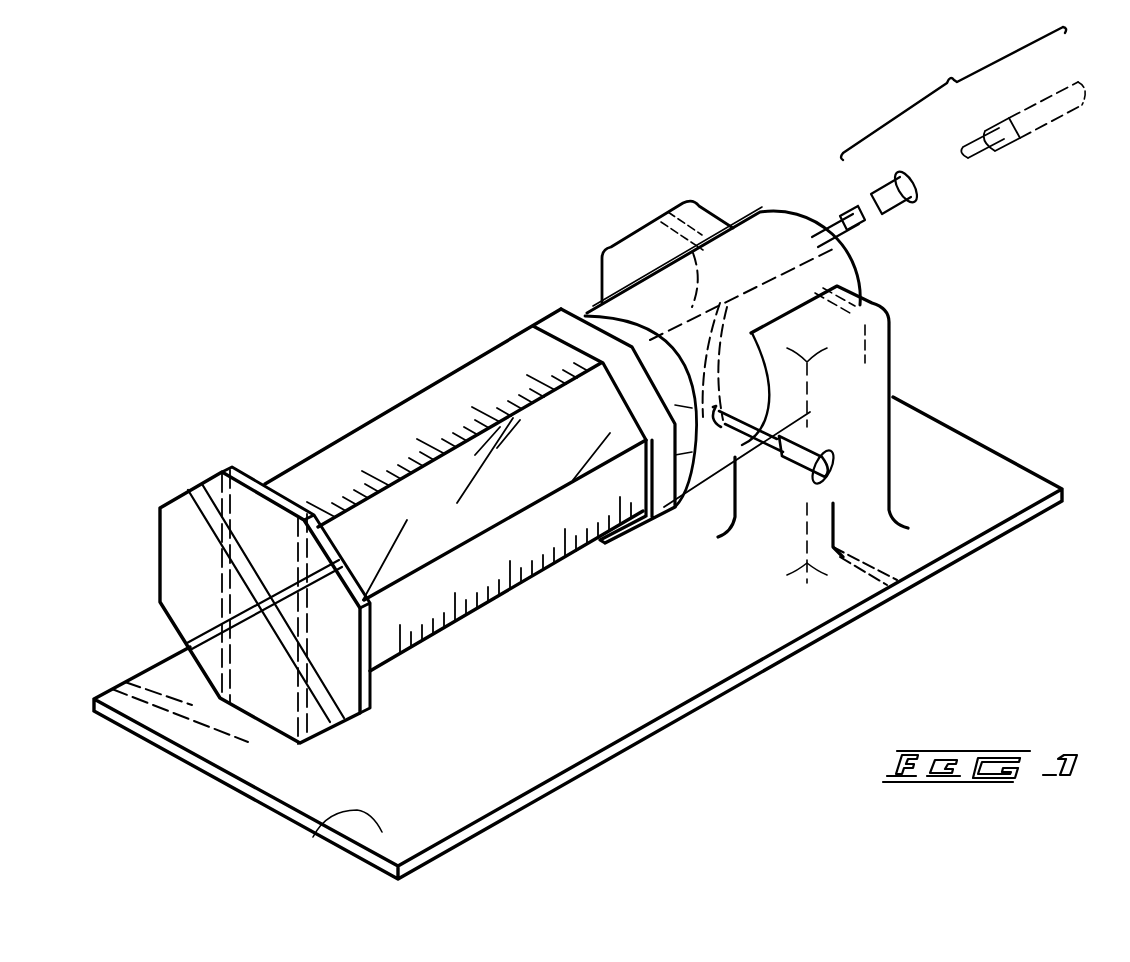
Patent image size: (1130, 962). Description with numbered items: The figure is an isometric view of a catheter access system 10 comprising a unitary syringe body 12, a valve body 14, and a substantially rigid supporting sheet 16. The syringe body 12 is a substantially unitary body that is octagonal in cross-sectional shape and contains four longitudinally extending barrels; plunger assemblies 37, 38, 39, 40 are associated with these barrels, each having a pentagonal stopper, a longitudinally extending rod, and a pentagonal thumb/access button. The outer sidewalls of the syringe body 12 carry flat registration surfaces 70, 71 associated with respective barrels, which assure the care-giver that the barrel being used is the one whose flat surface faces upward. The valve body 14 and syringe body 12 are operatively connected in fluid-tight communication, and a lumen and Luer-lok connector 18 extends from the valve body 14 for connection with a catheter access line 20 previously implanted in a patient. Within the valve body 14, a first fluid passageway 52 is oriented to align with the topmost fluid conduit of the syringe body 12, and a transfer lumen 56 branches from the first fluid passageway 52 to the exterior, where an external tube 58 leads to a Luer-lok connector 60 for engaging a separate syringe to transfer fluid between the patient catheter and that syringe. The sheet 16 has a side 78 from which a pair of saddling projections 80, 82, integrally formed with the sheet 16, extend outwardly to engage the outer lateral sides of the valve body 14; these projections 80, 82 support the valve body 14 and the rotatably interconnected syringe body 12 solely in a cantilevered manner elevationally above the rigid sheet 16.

The catheter access system 10 is at (612, 112).
The syringe body 12 is at (390, 436).
The valve body 14 is at (640, 303).
The rigid supporting sheet 16 is at (690, 705).
The lumen and Luer-lok connector 18 is at (870, 200).
The catheter access line 20 is at (1013, 153).
The plunger assembly 37 is at (257, 468).
The plunger assembly 38 is at (394, 680).
The plunger assembly 39 is at (265, 747).
The plunger assembly 40 is at (148, 546).
The first fluid passageway 52 is at (690, 265).
The transfer lumen 56 is at (753, 335).
The external tube 58 is at (748, 406).
The Luer-lok connector 60 is at (797, 458).
The flat registration surface 70 is at (342, 466).
The flat registration surface 71 is at (522, 560).
The side of sheet 78 is at (339, 842).
The saddling projection 80 is at (873, 378).
The saddling projection 82 is at (700, 215).